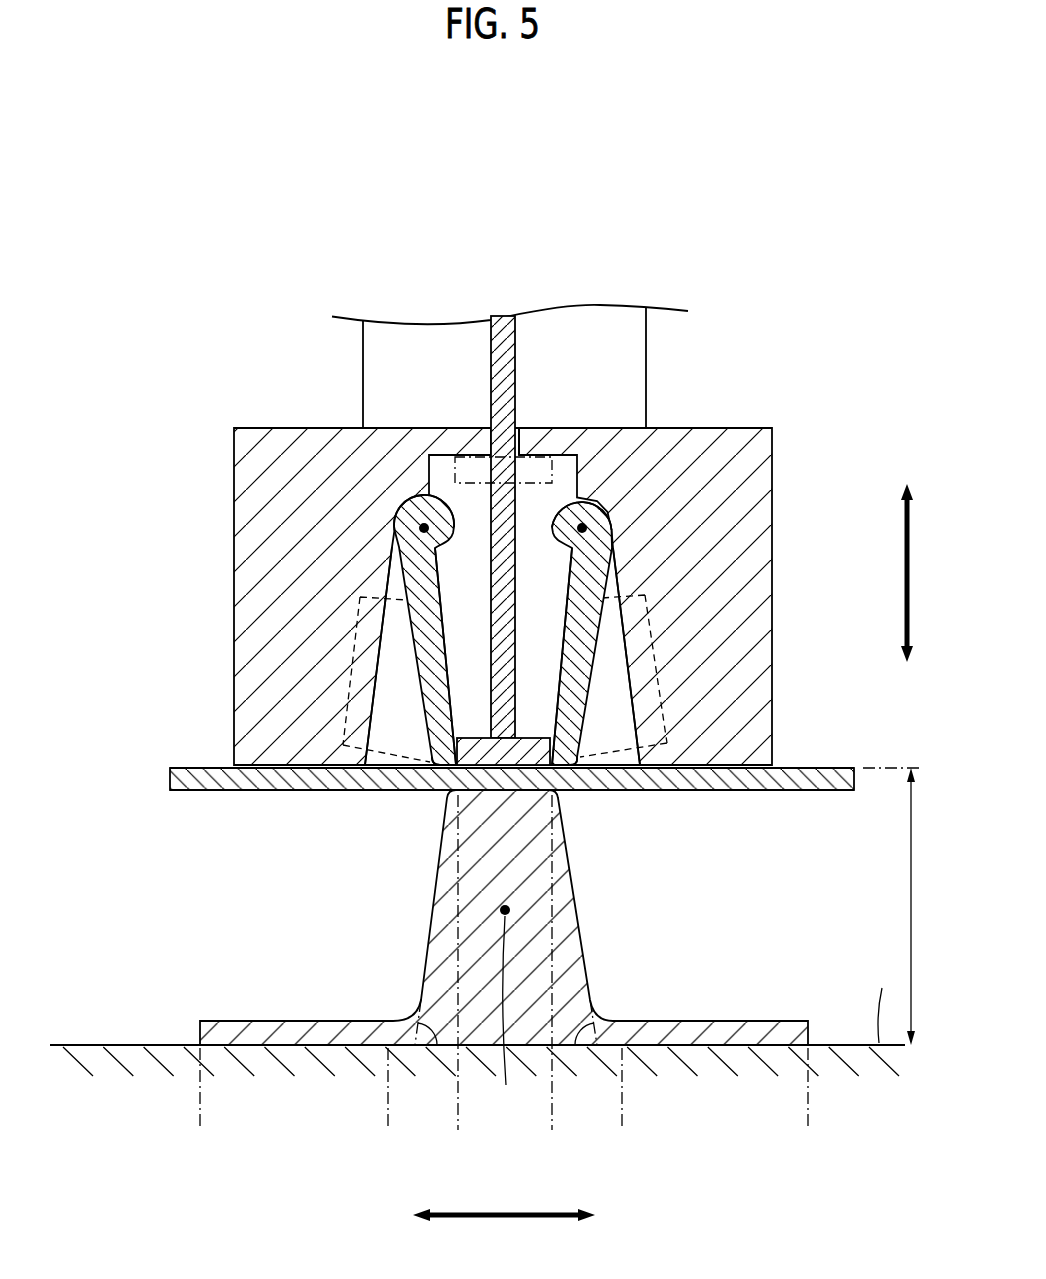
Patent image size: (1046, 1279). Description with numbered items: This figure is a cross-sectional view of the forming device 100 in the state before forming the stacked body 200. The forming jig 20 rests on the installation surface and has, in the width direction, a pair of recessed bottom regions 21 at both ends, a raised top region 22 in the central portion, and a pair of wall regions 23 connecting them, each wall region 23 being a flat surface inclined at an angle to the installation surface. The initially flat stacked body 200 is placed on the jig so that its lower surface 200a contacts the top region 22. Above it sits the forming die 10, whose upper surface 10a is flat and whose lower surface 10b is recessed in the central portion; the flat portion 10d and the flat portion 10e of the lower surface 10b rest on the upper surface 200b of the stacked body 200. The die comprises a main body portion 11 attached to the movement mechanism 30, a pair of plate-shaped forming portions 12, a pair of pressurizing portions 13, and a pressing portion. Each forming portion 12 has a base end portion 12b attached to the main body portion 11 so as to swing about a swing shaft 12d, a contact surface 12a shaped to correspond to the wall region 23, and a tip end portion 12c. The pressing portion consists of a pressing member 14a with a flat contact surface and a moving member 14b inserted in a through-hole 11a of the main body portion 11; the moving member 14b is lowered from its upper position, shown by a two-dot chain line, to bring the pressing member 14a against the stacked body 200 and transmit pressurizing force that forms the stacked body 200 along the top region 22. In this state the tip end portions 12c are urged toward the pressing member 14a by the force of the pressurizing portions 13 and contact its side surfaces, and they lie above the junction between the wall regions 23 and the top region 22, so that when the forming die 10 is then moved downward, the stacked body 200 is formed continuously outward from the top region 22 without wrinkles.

The forming device 100 is at (153, 268).
The forming die 10 is at (183, 408).
The upper surface 10a is at (735, 427).
The lower surface 10b is at (774, 766).
The flat portion 10d is at (265, 766).
The flat portion 10e is at (730, 766).
The main body portion 11 is at (773, 463).
The through-hole 11a is at (518, 430).
The forming portion 12 is at (412, 560).
The contact surface 12a is at (562, 636).
The base end portion 12b is at (441, 499).
The tip end portion 12c is at (436, 767).
The swing shaft 12d is at (423, 524).
The pressurizing portion 13 is at (388, 757).
The pressing member 14a is at (473, 483).
The moving member 14b is at (512, 325).
The forming jig 20 is at (388, 928).
The bottom region 21 is at (808, 1128).
The top region 22 is at (552, 1128).
The wall region 23 is at (622, 1128).
The movement mechanism 30 is at (363, 383).
The stacked body 200 is at (170, 778).
The lower surface 200a is at (183, 791).
The upper surface 200b is at (183, 767).